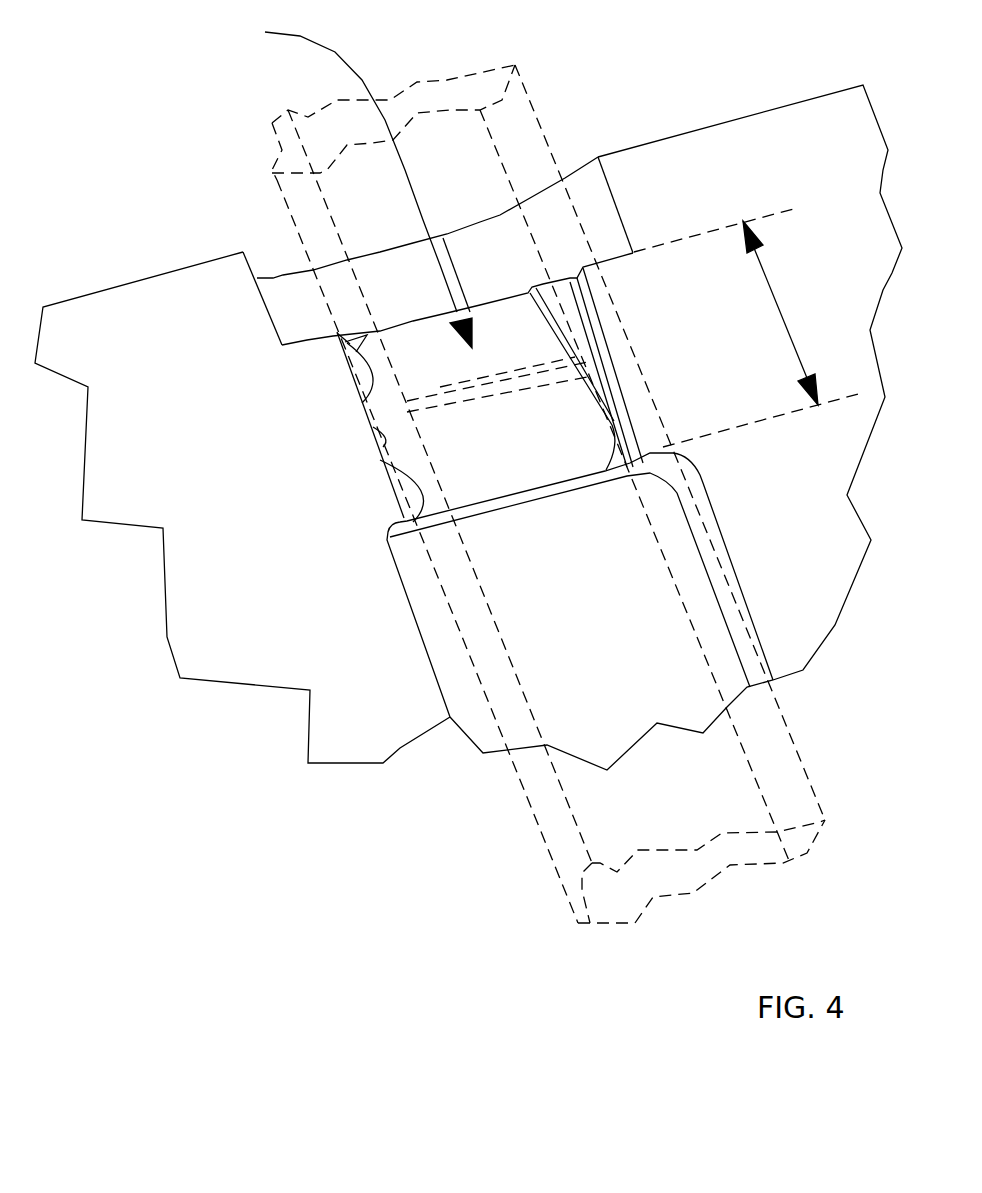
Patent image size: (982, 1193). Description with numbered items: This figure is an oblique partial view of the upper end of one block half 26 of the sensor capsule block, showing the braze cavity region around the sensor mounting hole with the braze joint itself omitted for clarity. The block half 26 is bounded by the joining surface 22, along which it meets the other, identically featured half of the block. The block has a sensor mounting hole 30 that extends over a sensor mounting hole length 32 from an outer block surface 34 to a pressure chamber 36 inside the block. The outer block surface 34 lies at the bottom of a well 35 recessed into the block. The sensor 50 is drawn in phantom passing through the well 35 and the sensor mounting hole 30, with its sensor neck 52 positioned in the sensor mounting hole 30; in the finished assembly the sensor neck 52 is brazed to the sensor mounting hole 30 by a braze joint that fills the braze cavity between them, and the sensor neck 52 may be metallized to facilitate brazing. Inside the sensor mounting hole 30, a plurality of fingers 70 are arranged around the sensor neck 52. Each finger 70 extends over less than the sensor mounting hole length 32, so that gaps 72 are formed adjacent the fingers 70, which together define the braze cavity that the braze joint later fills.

The joining surface 22 is at (809, 178).
The block half 26 is at (143, 278).
The sensor mounting hole 30 is at (352, 185).
The sensor mounting hole length 32 is at (743, 221).
The outer block surface 34 is at (298, 342).
The well 35 is at (574, 163).
The pressure chamber 36 is at (405, 575).
The sensor 50 is at (417, 82).
The sensor neck 52 is at (522, 392).
The fingers 70 is at (550, 287).
The gaps 72 is at (592, 358).